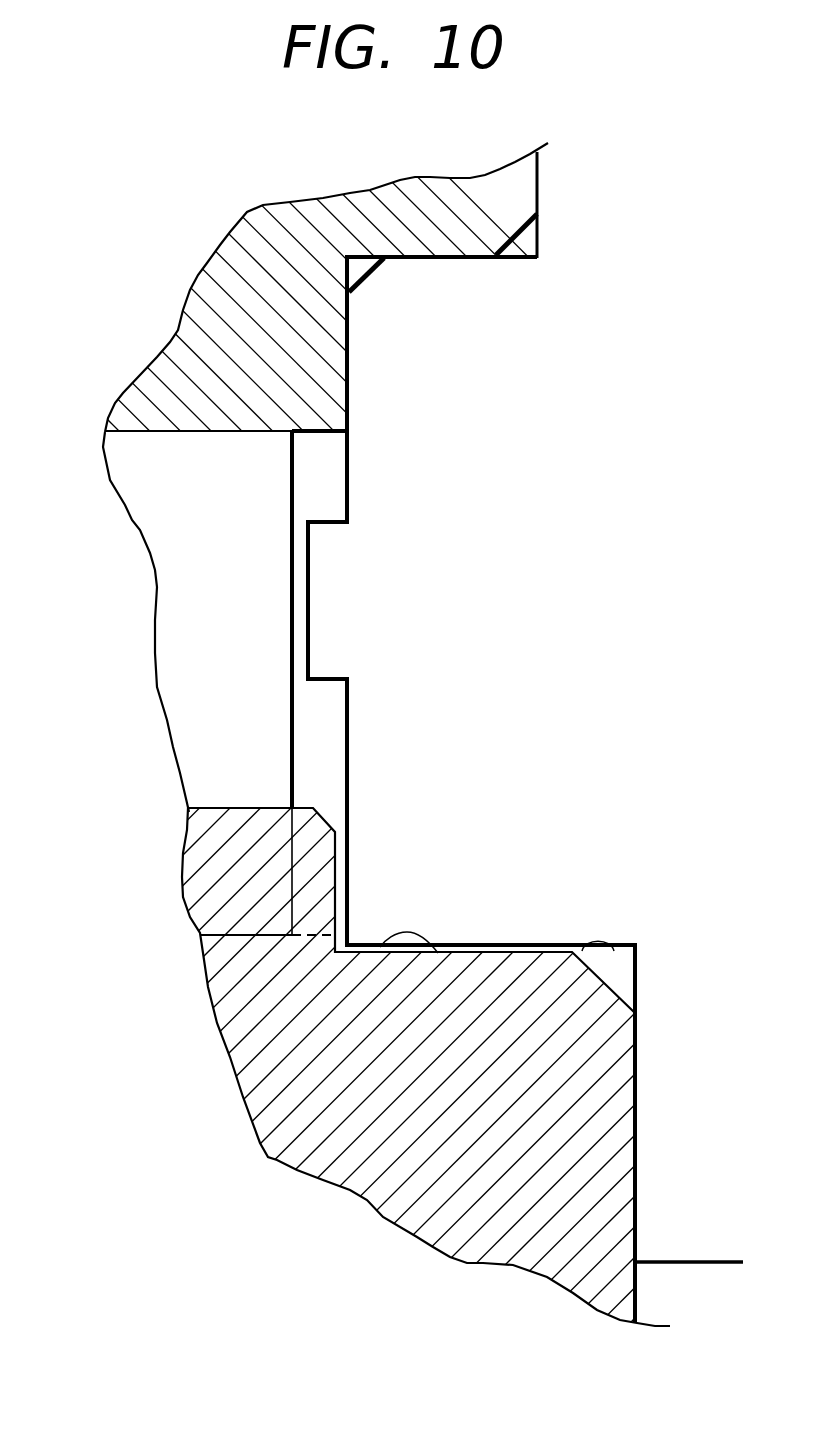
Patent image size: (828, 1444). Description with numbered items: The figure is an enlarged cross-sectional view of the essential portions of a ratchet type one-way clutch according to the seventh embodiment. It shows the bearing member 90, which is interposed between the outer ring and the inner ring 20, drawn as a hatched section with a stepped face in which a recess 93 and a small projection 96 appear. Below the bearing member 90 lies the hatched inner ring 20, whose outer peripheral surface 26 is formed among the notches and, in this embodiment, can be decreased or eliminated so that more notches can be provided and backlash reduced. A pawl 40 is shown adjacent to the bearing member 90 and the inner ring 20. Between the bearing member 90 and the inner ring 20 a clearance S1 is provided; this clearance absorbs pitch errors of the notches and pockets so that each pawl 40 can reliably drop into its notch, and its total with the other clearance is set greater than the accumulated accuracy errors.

The bearing member 90 is at (468, 320).
The recess of housing member 93 is at (332, 588).
The pawl 40 is at (118, 634).
The inner ring 20 is at (414, 1065).
The outer peripheral surface 26 is at (320, 1061).
The projection of housing member 96 is at (613, 945).
The clearance S1 is at (473, 985).